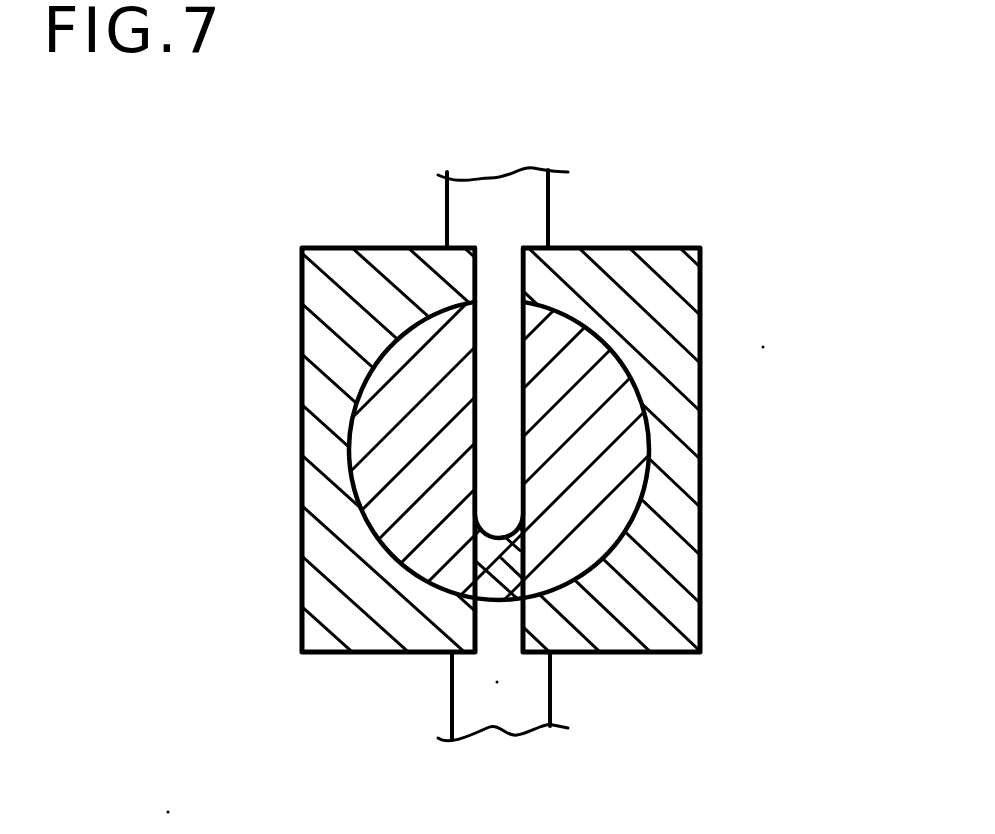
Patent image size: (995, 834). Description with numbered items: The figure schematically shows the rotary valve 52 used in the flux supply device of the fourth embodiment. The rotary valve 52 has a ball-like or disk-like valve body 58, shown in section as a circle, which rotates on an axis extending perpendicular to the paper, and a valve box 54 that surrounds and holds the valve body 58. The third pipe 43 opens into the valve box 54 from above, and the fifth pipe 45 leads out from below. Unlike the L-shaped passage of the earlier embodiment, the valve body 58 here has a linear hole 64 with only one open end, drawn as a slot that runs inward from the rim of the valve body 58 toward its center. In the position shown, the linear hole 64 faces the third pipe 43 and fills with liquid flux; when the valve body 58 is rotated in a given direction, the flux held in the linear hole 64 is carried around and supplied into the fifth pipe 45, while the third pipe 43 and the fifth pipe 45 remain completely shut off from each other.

The third pipe 43 is at (553, 210).
The fifth pipe 45 is at (553, 690).
The rotary valve 52 is at (283, 330).
The valve box 54 is at (672, 313).
The valve body 58 is at (400, 438).
The linear hole 64 is at (525, 450).